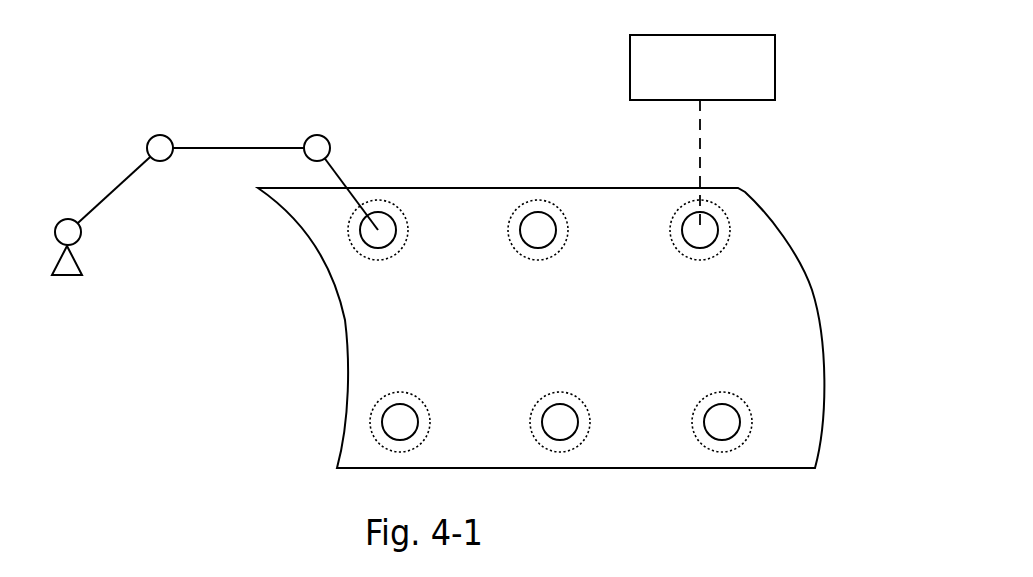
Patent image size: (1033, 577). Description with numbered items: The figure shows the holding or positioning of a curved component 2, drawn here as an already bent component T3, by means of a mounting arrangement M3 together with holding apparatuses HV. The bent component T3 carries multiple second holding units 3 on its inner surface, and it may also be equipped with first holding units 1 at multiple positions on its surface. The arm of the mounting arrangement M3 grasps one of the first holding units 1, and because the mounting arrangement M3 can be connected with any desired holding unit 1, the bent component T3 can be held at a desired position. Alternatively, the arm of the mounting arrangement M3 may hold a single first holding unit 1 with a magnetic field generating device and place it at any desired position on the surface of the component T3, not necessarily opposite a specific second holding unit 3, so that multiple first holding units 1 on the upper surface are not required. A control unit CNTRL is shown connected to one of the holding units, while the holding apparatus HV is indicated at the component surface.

The first holding unit 1 is at (381, 257).
The curved component 2 is at (790, 286).
The second holding unit 3 is at (386, 204).
The mounting arrangement M3 is at (63, 278).
The holding apparatus HV is at (503, 187).
The controller CNTRL is at (702, 132).
The bent component T3 is at (599, 332).